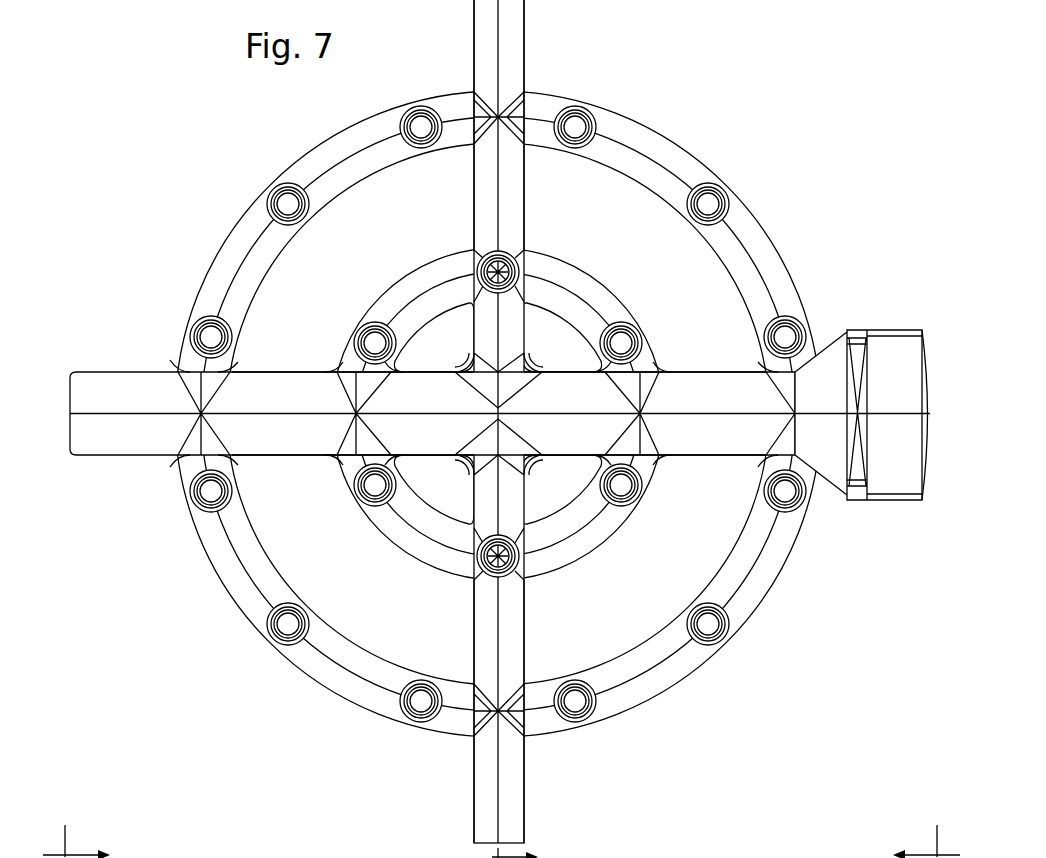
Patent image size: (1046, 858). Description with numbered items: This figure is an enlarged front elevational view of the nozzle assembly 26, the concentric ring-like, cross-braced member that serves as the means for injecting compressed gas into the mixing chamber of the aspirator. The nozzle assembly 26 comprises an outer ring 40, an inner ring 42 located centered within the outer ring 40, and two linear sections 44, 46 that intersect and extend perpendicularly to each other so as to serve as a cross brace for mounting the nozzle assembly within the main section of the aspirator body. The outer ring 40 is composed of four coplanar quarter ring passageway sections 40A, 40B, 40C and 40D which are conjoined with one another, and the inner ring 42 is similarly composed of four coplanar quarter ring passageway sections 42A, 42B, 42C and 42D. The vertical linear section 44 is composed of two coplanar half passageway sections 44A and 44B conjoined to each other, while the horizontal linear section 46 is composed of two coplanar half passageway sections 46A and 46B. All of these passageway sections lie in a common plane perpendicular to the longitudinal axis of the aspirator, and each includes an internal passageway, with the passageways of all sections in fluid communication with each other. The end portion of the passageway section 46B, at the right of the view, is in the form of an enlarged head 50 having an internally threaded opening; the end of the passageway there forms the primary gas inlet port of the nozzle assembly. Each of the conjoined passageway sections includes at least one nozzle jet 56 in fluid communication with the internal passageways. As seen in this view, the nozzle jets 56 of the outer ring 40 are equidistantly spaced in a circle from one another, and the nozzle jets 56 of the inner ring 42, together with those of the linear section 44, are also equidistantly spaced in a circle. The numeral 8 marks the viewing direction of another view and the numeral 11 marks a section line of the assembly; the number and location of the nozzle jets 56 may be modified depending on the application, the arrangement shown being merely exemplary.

The nozzle assembly 26 is at (186, 121).
The outer ring 40 is at (507, 411).
The quarter ring passageway section 40A is at (235, 253).
The quarter ring passageway section 40B is at (778, 248).
The quarter ring passageway section 40C is at (662, 668).
The quarter ring passageway section 40D is at (243, 587).
The inner ring 42 is at (506, 390).
The quarter ring passageway section 42A is at (415, 293).
The quarter ring passageway section 42B is at (578, 287).
The quarter ring passageway section 42C is at (596, 536).
The quarter ring passageway section 42D is at (413, 538).
The linear section 44 is at (505, 421).
The half passageway section 44A is at (490, 68).
The half passageway section 44B is at (515, 632).
The linear section 46 is at (458, 432).
The half passageway section 46A is at (305, 430).
The half passageway section 46B is at (715, 430).
The enlarged head 50 is at (888, 372).
The nozzle jet 56 is at (290, 183).
The view direction indicator 8 is at (530, 512).
The section line indicator 11 is at (160, 624).